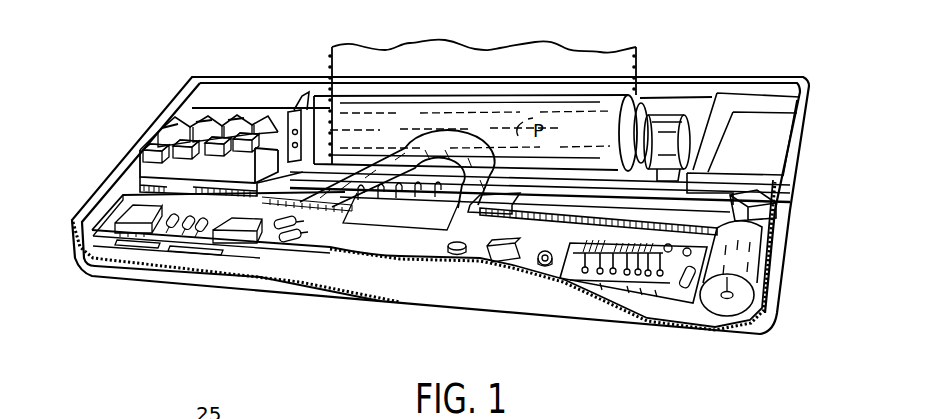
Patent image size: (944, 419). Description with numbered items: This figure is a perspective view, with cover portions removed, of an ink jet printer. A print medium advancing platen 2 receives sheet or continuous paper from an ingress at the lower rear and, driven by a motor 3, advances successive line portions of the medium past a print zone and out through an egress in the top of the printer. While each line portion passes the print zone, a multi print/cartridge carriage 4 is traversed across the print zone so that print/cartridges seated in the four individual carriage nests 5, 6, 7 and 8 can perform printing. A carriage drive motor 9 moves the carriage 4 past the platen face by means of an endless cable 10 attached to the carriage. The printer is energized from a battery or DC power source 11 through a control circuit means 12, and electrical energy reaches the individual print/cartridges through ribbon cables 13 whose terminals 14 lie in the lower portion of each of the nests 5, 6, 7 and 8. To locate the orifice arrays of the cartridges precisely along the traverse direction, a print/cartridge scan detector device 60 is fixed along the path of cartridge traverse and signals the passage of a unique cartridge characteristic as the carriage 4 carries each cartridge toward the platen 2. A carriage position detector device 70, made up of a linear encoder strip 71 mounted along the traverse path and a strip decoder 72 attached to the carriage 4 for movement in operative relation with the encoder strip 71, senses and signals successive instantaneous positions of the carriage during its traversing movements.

The print medium advancing platen 2 is at (472, 105).
The motor 3 is at (665, 116).
The multi print/cartridge carriage 4 is at (125, 150).
The carriage nest 5 is at (186, 101).
The carriage nest 6 is at (213, 101).
The carriage nest 7 is at (238, 101).
The carriage nest 8 is at (265, 101).
The carriage drive motor 9 is at (740, 303).
The endless cable 10 is at (557, 278).
The battery or DC power source 11 is at (748, 123).
The control circuit means 12 is at (640, 290).
The ribbon cables 13 is at (397, 254).
The terminals 14 is at (172, 140).
The print/cartridge scan detector device 60 is at (296, 108).
The carriage position detector device 70 is at (146, 225).
The linear encoder strip 71 is at (493, 258).
The strip decoder 72 is at (180, 200).